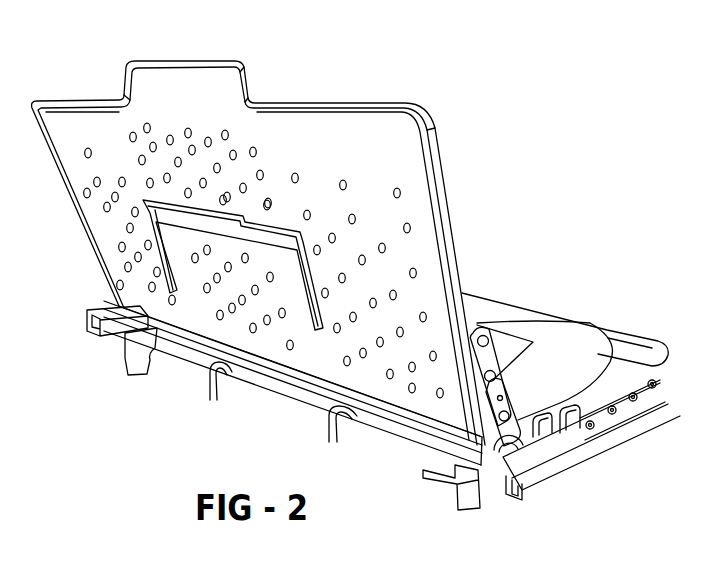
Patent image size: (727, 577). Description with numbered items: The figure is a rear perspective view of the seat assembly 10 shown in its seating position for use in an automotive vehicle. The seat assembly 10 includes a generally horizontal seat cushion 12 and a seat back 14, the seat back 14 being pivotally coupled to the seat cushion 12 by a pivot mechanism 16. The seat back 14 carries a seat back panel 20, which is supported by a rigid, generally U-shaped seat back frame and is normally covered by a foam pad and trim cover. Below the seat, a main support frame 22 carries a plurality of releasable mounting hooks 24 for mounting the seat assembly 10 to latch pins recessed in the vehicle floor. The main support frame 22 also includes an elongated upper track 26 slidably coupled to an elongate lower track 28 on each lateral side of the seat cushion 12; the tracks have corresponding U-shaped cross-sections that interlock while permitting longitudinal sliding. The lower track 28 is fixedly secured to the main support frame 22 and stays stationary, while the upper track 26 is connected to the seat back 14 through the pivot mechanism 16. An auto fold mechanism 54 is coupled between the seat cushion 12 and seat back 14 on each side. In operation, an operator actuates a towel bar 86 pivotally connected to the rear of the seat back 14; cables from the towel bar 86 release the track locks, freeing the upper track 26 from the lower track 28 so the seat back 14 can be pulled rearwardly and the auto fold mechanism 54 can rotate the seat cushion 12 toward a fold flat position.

The seat assembly 10 is at (554, 209).
The seat cushion 12 is at (554, 310).
The seat back 14 is at (440, 117).
The pivot mechanism 16 is at (498, 468).
The seat back panel 20 is at (191, 106).
The main support frame 22 is at (392, 432).
The releasable mounting hooks 24 is at (125, 362).
The upper track 26 is at (565, 464).
The lower track 28 is at (517, 498).
The auto fold mechanism 54 is at (638, 403).
The towel bar 86 is at (300, 228).